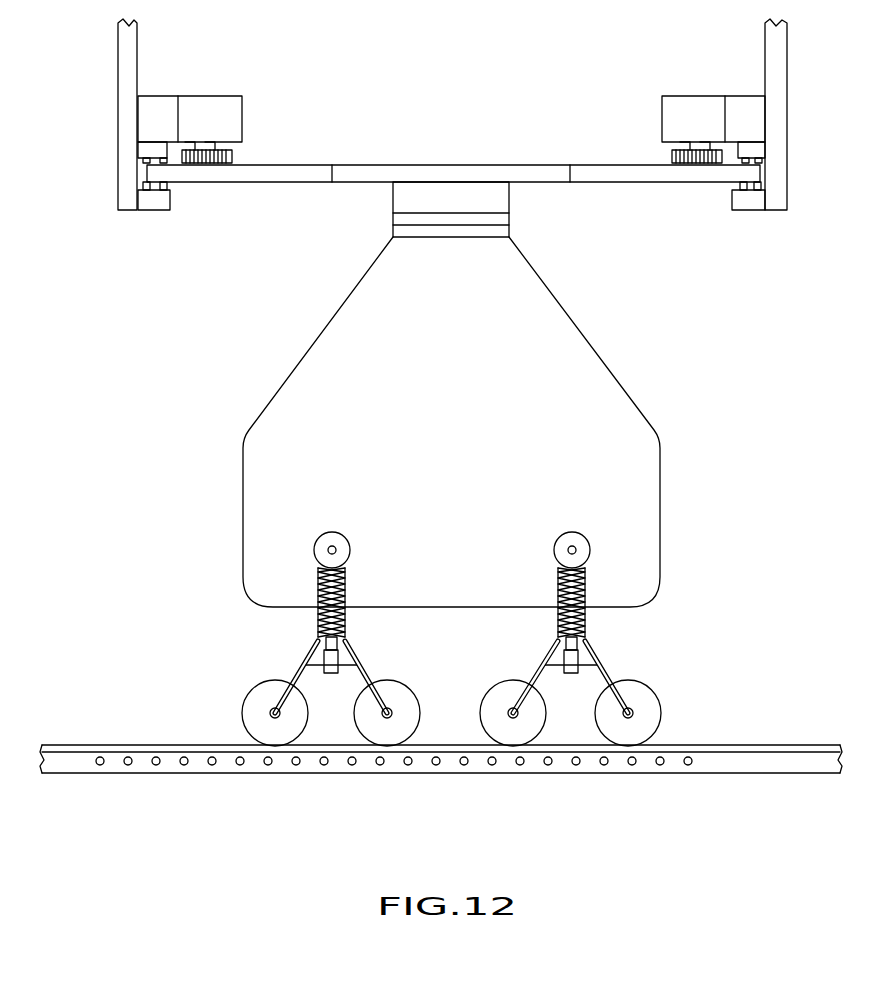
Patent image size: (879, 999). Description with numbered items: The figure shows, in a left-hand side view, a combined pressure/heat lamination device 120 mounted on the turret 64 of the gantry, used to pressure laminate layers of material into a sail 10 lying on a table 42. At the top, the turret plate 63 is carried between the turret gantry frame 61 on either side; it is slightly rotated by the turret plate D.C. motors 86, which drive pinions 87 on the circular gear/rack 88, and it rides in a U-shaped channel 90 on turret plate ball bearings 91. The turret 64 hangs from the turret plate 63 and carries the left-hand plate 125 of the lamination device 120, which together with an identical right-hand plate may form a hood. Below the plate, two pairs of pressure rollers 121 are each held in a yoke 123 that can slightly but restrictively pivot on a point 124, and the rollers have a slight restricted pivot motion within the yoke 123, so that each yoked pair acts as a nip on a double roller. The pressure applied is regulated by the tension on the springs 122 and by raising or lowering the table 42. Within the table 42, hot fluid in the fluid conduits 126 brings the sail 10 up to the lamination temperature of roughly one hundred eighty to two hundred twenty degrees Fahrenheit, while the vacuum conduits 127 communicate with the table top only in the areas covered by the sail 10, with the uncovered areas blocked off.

The sail 10 is at (760, 745).
The table 42 is at (740, 773).
The turret gantry frame 61 is at (118, 48).
The turret plate 63 is at (318, 165).
The turret 64 is at (509, 210).
The turret plate D.C. motors 86 is at (205, 96).
The pinions 87 is at (232, 156).
The circular gear/rack 88 is at (192, 166).
The U-shaped channel 90 is at (143, 173).
The turret plate ball bearings 91 is at (138, 200).
The combined pressure/heat lamination device 120 is at (658, 390).
The pressure rollers 121 is at (246, 698).
The springs 122 is at (348, 590).
The yoke 123 is at (308, 645).
The point 124 is at (340, 540).
The left-hand plate 125 is at (290, 372).
The fluid conduits 126 is at (184, 757).
The vacuum conduits 127 is at (156, 765).